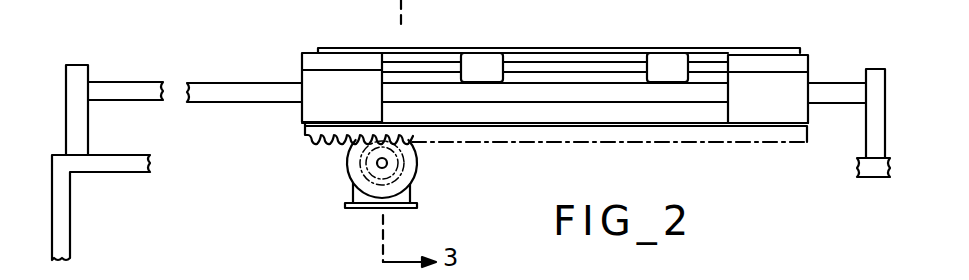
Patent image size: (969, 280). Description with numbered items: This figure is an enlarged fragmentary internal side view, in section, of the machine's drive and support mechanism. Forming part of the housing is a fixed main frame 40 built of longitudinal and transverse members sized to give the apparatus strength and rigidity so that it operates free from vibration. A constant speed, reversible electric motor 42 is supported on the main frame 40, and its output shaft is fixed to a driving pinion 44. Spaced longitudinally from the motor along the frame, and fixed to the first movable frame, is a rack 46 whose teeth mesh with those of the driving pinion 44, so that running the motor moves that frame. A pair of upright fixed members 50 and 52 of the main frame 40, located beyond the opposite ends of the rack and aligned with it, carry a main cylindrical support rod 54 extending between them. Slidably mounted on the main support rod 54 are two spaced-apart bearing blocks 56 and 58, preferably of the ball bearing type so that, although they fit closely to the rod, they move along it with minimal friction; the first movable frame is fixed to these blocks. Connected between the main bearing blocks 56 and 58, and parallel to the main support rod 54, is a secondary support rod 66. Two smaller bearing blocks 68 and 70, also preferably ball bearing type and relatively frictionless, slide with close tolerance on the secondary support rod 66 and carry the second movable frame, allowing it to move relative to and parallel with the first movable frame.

The fixed main frame 40 is at (70, 226).
The upright fixed member 50 is at (82, 65).
The main cylindrical support rod 54 is at (133, 82).
The bearing block 56 is at (310, 78).
The bearing block 58 is at (785, 60).
The secondary support rod 66 is at (432, 62).
The smaller bearing block 68 is at (490, 57).
The smaller bearing block 70 is at (675, 57).
The upright fixed member 52 is at (866, 70).
The rack 46 is at (338, 143).
The reversible electric motor 42 is at (416, 166).
The driving pinion 44 is at (353, 175).